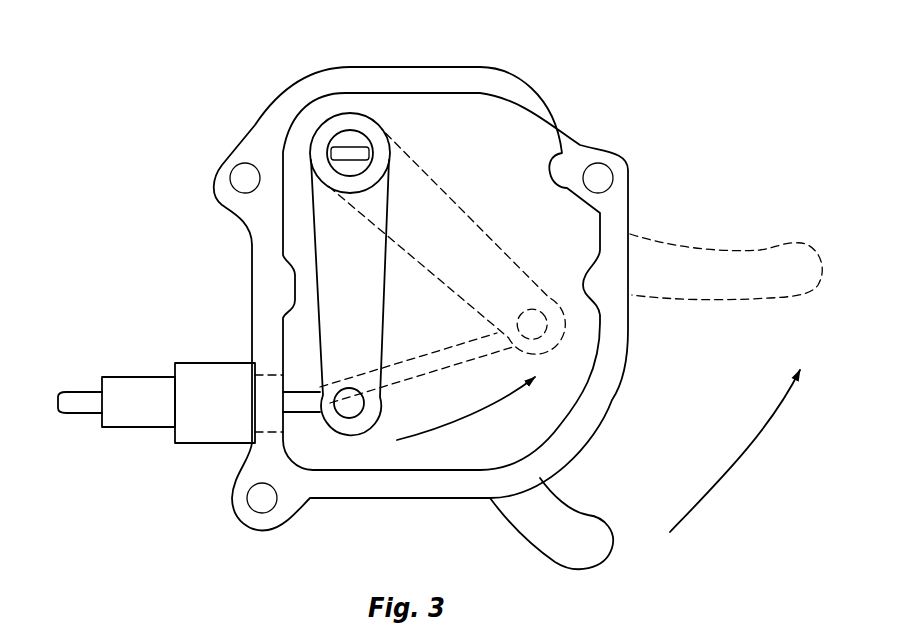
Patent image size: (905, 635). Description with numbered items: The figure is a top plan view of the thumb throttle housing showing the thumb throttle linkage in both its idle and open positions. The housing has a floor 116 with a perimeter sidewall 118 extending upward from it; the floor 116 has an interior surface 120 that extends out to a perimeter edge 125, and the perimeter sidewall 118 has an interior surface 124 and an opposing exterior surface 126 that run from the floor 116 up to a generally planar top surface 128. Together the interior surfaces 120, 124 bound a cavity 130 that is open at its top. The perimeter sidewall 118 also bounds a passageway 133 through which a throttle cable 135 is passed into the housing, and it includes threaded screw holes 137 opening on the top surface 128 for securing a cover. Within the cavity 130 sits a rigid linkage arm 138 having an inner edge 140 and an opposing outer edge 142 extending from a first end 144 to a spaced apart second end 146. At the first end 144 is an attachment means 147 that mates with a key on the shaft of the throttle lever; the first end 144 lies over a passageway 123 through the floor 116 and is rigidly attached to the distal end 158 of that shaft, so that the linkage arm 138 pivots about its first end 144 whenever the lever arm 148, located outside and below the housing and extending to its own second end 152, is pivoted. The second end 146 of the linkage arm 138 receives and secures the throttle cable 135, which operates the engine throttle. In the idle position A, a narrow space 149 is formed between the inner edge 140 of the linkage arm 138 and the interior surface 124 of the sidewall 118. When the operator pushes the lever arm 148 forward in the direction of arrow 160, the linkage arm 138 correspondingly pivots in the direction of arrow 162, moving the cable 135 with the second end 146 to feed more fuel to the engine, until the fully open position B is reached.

The floor 116 is at (487, 118).
The perimeter sidewall 118 is at (617, 220).
The interior surface 120 is at (515, 152).
The interior surface 124 is at (548, 153).
The cavity 130 is at (673, 45).
The exterior surface 126 is at (630, 186).
The perimeter edge 125 is at (628, 330).
The top surface 128 is at (602, 289).
The threaded screw holes 137 is at (245, 178).
The first end 144 is at (306, 149).
The attachment means 147 is at (338, 130).
The distal end 158 is at (349, 147).
The passageway 123 is at (320, 136).
The linkage arm 138 is at (330, 280).
The narrow space 149 is at (295, 352).
The inner edge 140 is at (317, 325).
The outer edge 142 is at (380, 340).
The second end 146 is at (310, 367).
The passageway 133 is at (268, 402).
The throttle cable 135 is at (310, 413).
The lever arm 148 is at (520, 507).
The second end 152 is at (553, 571).
The arrow 162 is at (473, 418).
The arrow 160 is at (727, 477).